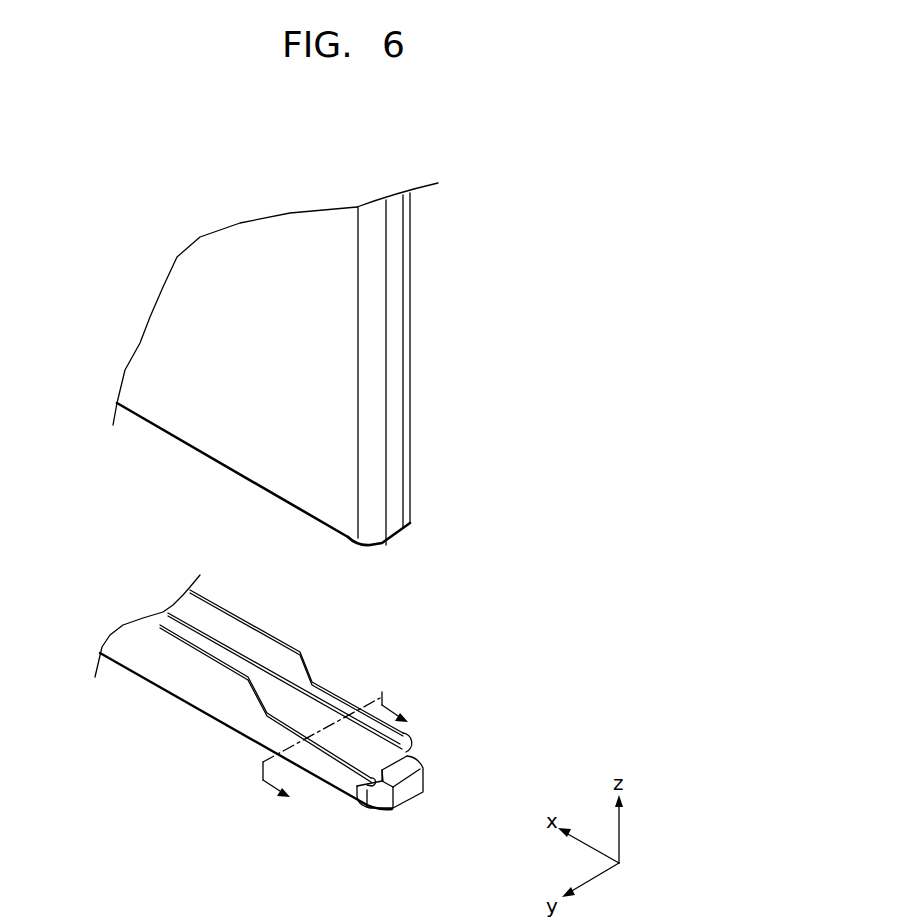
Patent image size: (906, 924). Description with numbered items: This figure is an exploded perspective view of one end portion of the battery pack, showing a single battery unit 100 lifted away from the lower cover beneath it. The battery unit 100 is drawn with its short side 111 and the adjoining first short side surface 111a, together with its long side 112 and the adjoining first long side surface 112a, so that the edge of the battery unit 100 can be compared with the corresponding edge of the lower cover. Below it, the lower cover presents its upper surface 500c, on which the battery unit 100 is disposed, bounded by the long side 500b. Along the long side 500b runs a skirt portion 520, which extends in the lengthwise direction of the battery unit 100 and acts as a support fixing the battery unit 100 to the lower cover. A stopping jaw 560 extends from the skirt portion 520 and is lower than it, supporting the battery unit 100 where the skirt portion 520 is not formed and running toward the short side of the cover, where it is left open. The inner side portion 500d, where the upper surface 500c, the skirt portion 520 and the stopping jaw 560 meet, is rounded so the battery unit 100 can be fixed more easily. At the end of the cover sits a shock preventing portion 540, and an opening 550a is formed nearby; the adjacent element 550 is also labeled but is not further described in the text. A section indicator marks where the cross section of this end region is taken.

The battery unit 100 is at (334, 364).
The short side 111 is at (395, 538).
The first short side surface 111a is at (400, 283).
The long side 112 is at (207, 457).
The first long side surface 112a is at (227, 317).
The long side of lower cover 500b is at (304, 718).
The upper surface 500c is at (282, 695).
The inner side portion 500d is at (218, 638).
The skirt portion 520 is at (268, 645).
The shock preventing portion 540 is at (405, 797).
The coupling rail 550 is at (405, 733).
The opening 550a is at (412, 755).
The stopping jaw 560 is at (367, 722).